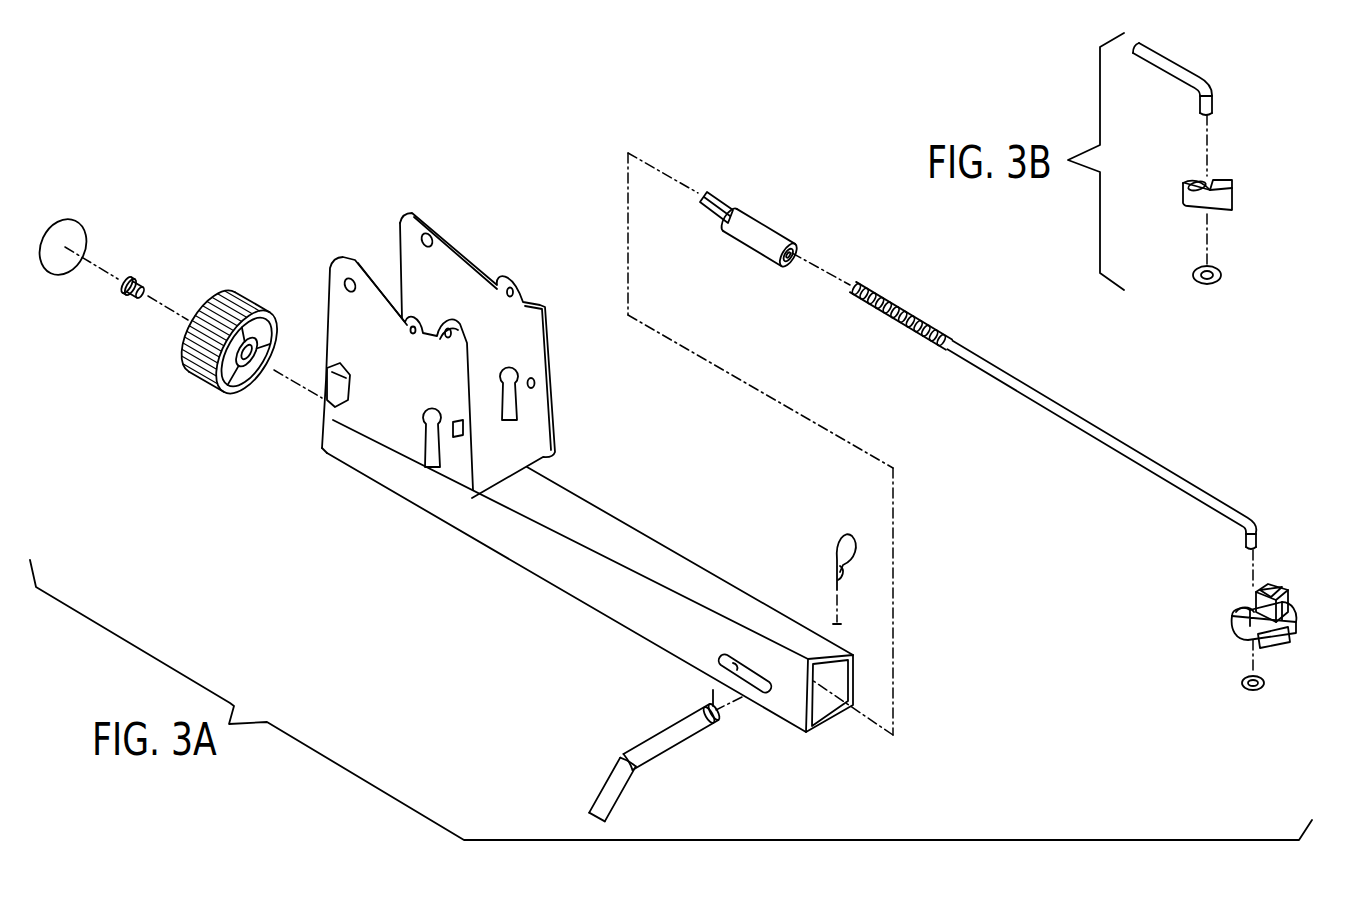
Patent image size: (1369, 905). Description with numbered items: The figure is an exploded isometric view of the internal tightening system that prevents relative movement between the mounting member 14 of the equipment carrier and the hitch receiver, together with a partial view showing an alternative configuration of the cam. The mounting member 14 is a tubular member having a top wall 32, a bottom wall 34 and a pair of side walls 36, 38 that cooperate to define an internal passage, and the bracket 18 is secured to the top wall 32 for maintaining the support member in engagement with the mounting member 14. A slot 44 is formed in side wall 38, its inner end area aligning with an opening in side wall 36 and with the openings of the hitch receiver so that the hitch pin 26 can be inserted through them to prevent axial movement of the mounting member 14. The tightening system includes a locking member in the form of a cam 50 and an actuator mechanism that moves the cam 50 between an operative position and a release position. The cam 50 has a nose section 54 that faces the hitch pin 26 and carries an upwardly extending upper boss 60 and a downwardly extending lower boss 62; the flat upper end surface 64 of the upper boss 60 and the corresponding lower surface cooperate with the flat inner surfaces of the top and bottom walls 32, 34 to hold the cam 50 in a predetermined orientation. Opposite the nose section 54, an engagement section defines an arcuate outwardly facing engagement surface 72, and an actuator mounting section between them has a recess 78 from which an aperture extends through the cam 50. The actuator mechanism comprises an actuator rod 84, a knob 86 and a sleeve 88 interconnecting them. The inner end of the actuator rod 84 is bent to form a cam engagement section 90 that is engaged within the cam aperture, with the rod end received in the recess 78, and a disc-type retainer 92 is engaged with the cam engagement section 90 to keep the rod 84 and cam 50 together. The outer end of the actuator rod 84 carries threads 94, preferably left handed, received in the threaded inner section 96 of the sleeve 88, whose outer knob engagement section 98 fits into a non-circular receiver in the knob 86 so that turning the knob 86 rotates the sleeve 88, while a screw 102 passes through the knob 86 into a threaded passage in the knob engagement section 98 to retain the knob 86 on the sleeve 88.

In FIG. 3A, the mounting member 14 is at (631, 613).
In FIG. 3A, the bracket 18 is at (543, 307).
In FIG. 3A, the hitch pin 26 is at (623, 770).
In FIG. 3A, the top wall 32 is at (631, 613).
In FIG. 3A, the bottom wall 34 is at (837, 727).
In FIG. 3A, the side wall 36 is at (836, 688).
In FIG. 3A, the side wall 38 is at (590, 592).
In FIG. 3A, the slot 44 is at (723, 670).
In FIG. 3A, the cam 50 is at (1234, 629).
In FIG. 3A, the nose section 54 is at (1245, 637).
In FIG. 3A, the upper boss 60 is at (1296, 573).
In FIG. 3A, the lower boss 62 is at (1278, 647).
In FIG. 3A, the upper end surface 64 is at (1263, 587).
In FIG. 3A, the engagement surface 72 is at (1245, 638).
In FIG. 3A, the recess 78 is at (1250, 610).
In FIG. 3A, the actuator rod 84 is at (1101, 449).
In FIG. 3B, the actuator rod 84 is at (1198, 87).
In FIG. 3A, the knob 86 is at (195, 373).
In FIG. 3A, the sleeve 88 is at (781, 200).
In FIG. 3A, the cam engagement section 90 is at (1243, 553).
In FIG. 3B, the cam engagement section 90 is at (1213, 98).
In FIG. 3A, the disc-type retainer 92 is at (1252, 693).
In FIG. 3B, the disc-type retainer 92 is at (1223, 278).
In FIG. 3A, the threads 94 is at (903, 315).
In FIG. 3A, the threaded inner section 96 is at (745, 203).
In FIG. 3A, the knob engagement section 98 is at (722, 193).
In FIG. 3A, the screw 102 is at (139, 276).